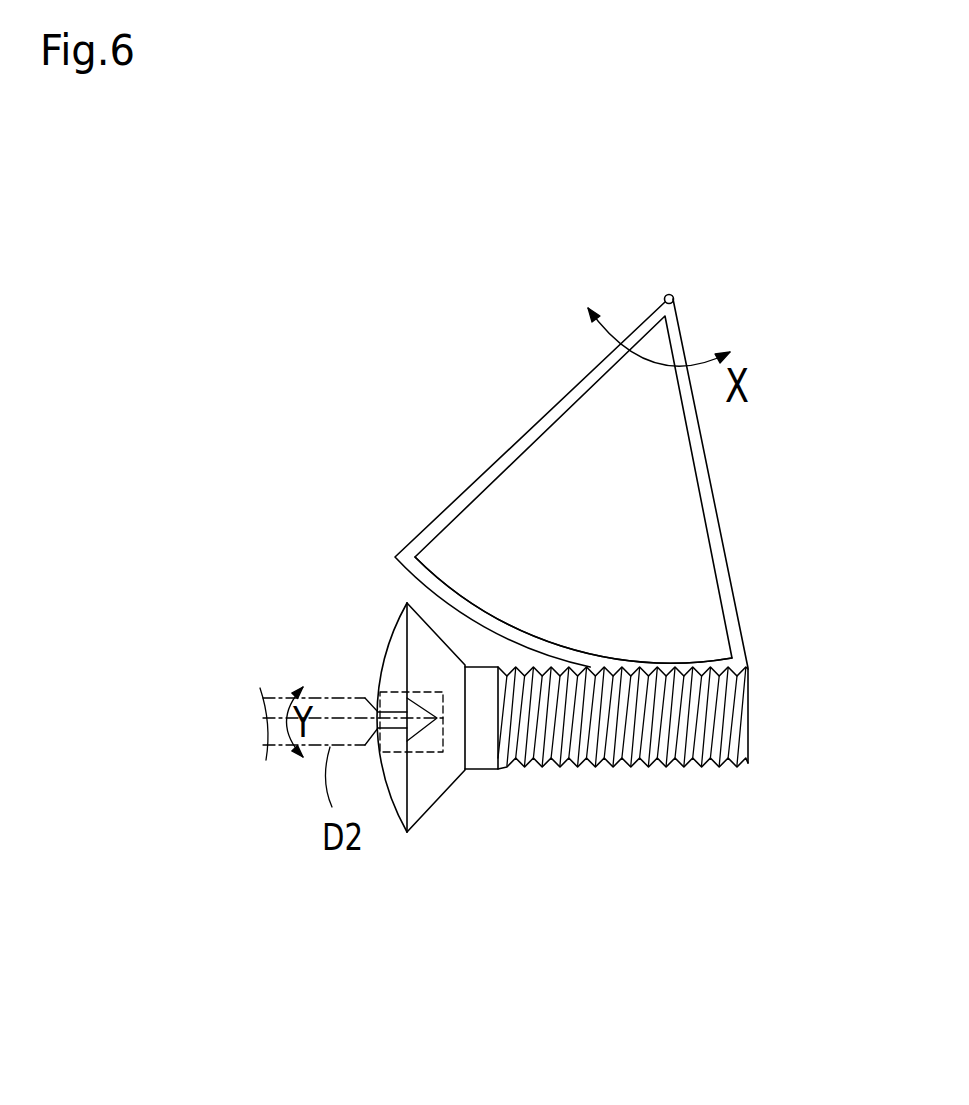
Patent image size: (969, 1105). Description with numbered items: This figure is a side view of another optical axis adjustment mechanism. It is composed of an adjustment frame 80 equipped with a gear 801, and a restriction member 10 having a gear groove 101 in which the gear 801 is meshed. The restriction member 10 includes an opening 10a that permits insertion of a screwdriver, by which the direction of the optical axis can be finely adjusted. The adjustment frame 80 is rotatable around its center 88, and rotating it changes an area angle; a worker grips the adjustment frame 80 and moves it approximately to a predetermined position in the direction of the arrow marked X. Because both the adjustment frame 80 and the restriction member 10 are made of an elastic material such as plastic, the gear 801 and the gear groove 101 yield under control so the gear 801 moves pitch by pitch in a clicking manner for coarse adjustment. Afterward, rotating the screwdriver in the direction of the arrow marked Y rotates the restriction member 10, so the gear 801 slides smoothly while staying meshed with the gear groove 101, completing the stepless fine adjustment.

The restriction member 10 is at (565, 760).
The opening 10a is at (432, 752).
The gear groove 101 is at (693, 667).
The adjustment frame 80 is at (712, 513).
The gear 801 is at (577, 671).
The center 88 is at (674, 300).